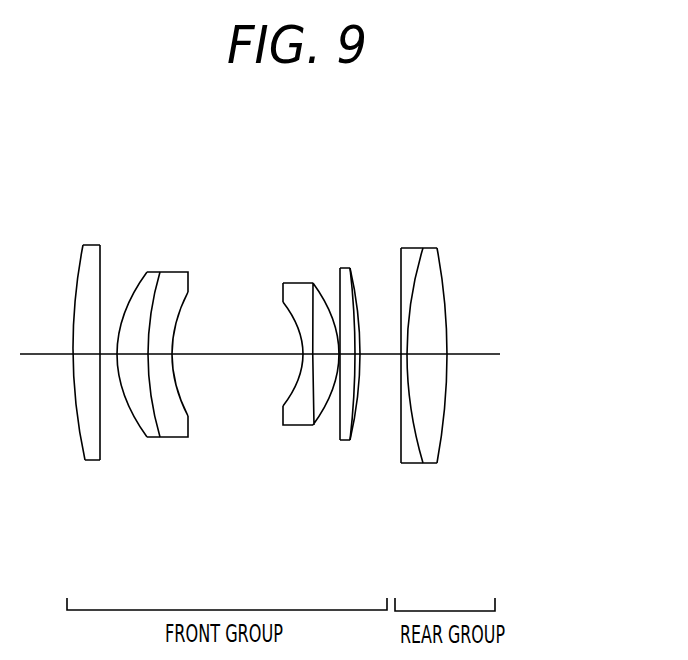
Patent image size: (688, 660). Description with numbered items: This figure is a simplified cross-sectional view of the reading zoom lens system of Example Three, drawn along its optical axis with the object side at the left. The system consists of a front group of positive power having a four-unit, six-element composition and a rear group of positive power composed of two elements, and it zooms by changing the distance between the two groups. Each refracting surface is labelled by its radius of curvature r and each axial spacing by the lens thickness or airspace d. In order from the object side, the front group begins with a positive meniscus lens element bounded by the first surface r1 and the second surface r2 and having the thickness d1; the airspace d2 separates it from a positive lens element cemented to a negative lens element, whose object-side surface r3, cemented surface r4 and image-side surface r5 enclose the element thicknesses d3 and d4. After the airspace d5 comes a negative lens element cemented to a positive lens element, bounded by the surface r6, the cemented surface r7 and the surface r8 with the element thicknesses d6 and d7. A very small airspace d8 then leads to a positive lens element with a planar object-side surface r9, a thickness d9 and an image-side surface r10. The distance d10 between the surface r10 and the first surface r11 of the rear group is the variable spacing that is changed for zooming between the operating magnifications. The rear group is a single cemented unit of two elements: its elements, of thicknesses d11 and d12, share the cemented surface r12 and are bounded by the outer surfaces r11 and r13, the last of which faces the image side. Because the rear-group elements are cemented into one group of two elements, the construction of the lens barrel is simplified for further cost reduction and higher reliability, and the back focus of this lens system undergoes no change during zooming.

The first lens surface radius of curvature r1 is at (83, 245).
The second lens surface radius of curvature r2 is at (100, 245).
The third lens surface radius of curvature r3 is at (147, 272).
The fourth lens surface radius of curvature r4 is at (160, 272).
The fifth lens surface radius of curvature r5 is at (186, 272).
The sixth lens surface radius of curvature r6 is at (283, 283).
The seventh lens surface radius of curvature r7 is at (313, 283).
The eighth lens surface radius of curvature r8 is at (340, 268).
The ninth lens surface radius of curvature r9 is at (349, 268).
The tenth lens surface radius of curvature r10 is at (354, 292).
The eleventh lens surface radius of curvature r11 is at (401, 248).
The twelfth lens surface radius of curvature r12 is at (423, 248).
The thirteenth lens surface radius of curvature r13 is at (437, 248).
The first surface spacing d1 is at (87, 354).
The second surface spacing d2 is at (103, 354).
The third surface spacing d3 is at (119, 354).
The fourth surface spacing d4 is at (150, 354).
The fifth surface spacing d5 is at (236, 354).
The sixth surface spacing d6 is at (323, 354).
The seventh surface spacing d7 is at (338, 354).
The eighth surface spacing d8 is at (357, 354).
The ninth surface spacing d9 is at (380, 354).
The tenth surface spacing d10 is at (407, 354).
The eleventh surface spacing d11 is at (420, 354).
The twelfth surface spacing d12 is at (449, 354).